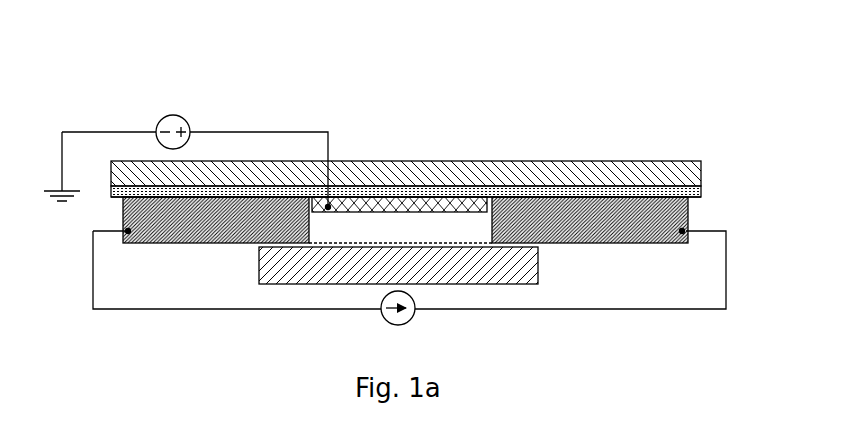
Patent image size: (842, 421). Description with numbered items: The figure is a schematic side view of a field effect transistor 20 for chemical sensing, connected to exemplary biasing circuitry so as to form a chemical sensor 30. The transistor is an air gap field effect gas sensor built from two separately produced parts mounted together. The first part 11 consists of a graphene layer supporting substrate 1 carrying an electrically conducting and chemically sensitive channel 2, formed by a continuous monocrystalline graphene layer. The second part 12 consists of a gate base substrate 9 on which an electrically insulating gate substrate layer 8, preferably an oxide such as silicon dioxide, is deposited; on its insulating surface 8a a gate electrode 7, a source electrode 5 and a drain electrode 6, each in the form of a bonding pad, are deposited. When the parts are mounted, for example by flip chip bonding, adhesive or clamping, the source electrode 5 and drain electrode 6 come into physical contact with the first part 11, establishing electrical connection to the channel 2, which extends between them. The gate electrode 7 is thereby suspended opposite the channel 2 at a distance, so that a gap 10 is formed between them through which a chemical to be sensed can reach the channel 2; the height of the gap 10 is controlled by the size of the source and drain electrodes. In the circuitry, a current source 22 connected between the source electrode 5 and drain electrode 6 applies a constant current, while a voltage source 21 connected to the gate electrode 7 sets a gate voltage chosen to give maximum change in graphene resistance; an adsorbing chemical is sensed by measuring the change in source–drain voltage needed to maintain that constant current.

The graphene layer supporting substrate 1 is at (538, 262).
The chemically sensitive channel 2 is at (315, 243).
The source electrode 5 is at (198, 248).
The drain electrode 6 is at (664, 244).
The gate electrode 7 is at (421, 212).
The electrically insulating gate substrate layer 8 is at (702, 196).
The insulating surface 8a is at (692, 199).
The gate base substrate 9 is at (363, 162).
The gap 10 is at (399, 227).
The first part 11 is at (757, 246).
The second part 12 is at (757, 160).
The field effect transistor 20 is at (663, 288).
The voltage source 21 is at (176, 115).
The current source 22 is at (400, 325).
The chemical sensor 30 is at (73, 78).